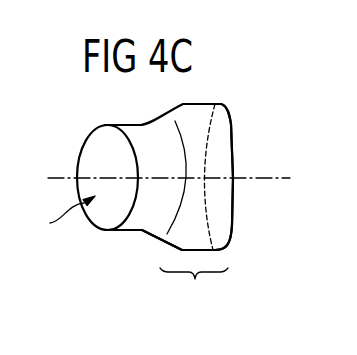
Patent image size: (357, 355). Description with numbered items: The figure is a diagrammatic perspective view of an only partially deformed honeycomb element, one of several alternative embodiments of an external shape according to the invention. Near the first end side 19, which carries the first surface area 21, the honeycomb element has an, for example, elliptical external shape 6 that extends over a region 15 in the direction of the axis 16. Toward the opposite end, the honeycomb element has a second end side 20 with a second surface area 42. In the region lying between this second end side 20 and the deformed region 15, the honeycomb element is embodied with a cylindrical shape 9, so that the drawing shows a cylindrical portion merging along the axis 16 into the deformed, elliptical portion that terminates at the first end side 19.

The elliptical external shape 6 is at (204, 103).
The first end side 19 is at (235, 137).
The second end side 20 is at (98, 143).
The second surface area 42 is at (59, 217).
The cylindrical shape 9 is at (123, 231).
The axis 16 is at (285, 180).
The first surface area 21 is at (236, 236).
The region 15 is at (194, 291).